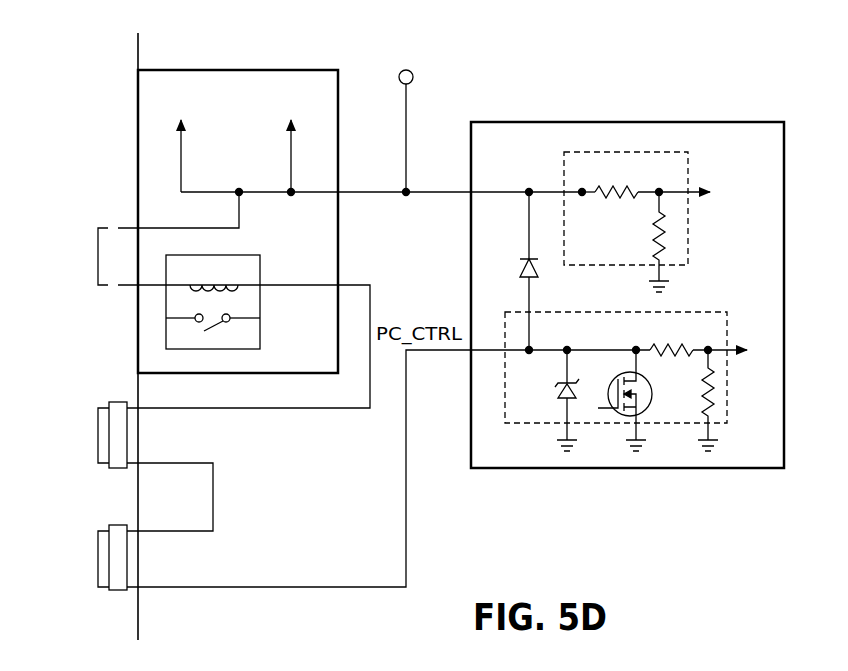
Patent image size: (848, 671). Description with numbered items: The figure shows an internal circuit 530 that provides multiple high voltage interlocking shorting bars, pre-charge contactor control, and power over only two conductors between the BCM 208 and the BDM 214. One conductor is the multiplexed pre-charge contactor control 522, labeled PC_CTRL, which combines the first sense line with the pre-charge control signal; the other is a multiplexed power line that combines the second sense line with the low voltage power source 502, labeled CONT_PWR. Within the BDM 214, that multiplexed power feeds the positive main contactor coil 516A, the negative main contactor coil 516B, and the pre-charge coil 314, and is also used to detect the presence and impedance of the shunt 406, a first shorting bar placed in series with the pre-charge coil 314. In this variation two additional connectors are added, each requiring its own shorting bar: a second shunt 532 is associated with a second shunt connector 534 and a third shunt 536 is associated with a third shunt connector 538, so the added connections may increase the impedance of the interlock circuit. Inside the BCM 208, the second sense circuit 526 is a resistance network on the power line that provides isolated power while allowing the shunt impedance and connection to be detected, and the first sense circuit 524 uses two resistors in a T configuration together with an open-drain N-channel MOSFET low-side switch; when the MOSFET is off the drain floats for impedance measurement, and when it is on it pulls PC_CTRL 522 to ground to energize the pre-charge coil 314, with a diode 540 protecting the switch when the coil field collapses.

The internal circuit 530 is at (655, 58).
The BDM 214 is at (138, 136).
The negative main contactor coil 516B is at (181, 166).
The positive main contactor coil 516A is at (291, 166).
The low voltage power source 502 is at (408, 118).
The shunt 406 is at (98, 258).
The pre-charge coil 314 is at (245, 255).
The multiplexed pre-charge contactor control 522 is at (357, 285).
The second shunt 532 is at (98, 437).
The second shunt connector 534 is at (118, 468).
The third shunt 536 is at (98, 558).
The third shunt connector 538 is at (118, 590).
The BCM 208 is at (743, 122).
The second sense circuit 526 is at (688, 173).
The diode 540 is at (534, 276).
The first sense circuit 524 is at (703, 312).